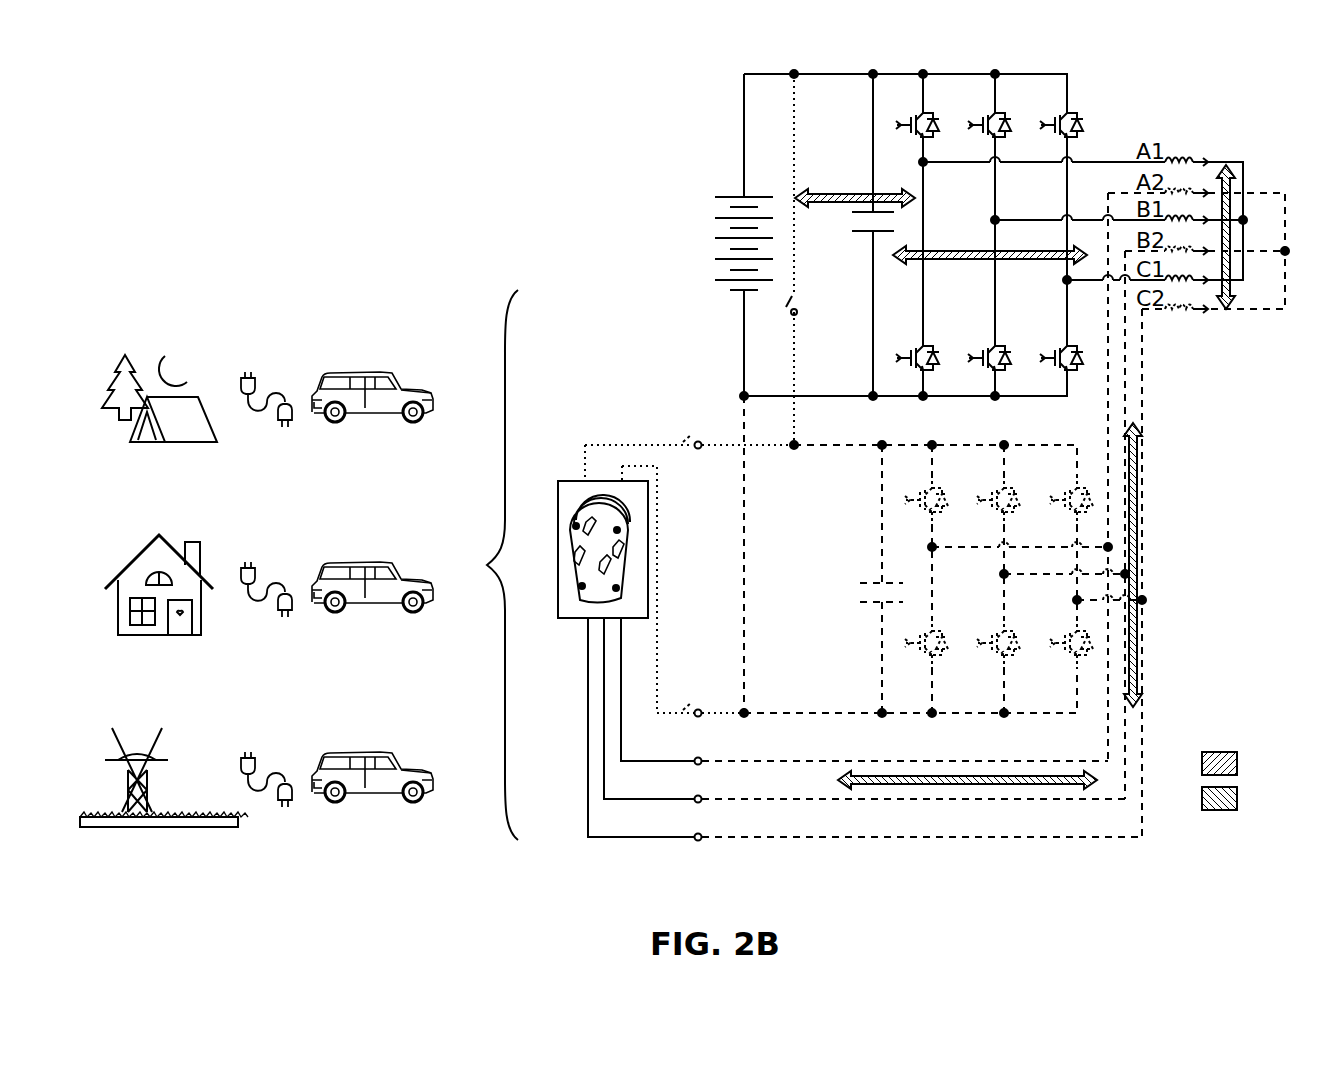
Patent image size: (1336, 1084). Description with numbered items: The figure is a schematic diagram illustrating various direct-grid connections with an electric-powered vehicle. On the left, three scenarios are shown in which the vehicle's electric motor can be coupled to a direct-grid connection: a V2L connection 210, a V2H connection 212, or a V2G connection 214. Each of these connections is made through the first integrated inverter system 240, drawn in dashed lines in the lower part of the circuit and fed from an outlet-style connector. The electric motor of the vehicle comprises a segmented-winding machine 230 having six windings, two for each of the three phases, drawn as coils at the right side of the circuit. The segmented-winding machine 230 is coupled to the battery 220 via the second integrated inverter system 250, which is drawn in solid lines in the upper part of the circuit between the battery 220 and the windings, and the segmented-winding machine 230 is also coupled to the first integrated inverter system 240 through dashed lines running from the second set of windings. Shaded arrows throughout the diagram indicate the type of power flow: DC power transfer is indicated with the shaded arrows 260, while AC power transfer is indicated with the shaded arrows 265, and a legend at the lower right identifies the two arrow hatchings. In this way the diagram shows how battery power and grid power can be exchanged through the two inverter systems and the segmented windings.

The V2L connection 210 is at (414, 383).
The V2H connection 212 is at (414, 572).
The V2G connection 214 is at (414, 762).
The battery 220 is at (712, 178).
The segmented-winding machine 230 is at (1186, 110).
The first integrated inverter system 240 is at (1063, 749).
The second integrated inverter system 250 is at (1063, 432).
The shaded arrows indicating DC power transfer 260 is at (1237, 762).
The shaded arrows indicating AC power transfer 265 is at (1237, 797).